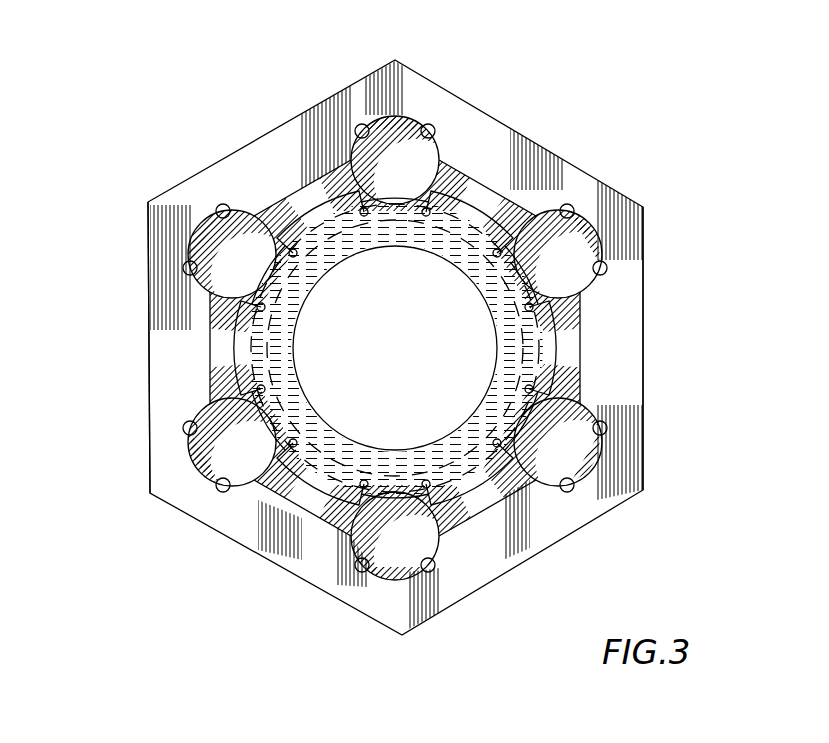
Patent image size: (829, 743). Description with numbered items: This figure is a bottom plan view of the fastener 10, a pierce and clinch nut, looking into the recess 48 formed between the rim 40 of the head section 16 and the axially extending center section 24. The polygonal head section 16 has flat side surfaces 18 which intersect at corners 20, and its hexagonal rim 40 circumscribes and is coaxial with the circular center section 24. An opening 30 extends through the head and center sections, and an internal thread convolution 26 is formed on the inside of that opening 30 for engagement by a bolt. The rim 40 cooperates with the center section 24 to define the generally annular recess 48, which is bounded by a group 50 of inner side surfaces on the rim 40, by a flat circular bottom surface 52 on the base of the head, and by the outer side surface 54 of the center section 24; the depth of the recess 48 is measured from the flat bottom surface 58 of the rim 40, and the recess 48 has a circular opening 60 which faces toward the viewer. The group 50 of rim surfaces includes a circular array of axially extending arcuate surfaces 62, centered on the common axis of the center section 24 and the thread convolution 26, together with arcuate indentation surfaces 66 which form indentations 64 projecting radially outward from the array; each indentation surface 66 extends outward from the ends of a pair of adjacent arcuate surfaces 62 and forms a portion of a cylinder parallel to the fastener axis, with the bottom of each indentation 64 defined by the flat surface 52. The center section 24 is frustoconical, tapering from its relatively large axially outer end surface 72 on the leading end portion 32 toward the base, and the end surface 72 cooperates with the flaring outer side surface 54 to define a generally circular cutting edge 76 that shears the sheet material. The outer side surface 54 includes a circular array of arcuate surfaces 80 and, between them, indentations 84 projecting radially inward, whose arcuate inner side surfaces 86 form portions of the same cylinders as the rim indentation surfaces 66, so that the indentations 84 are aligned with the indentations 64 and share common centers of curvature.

The fastener 10 is at (632, 92).
The polygonal head section 16 is at (283, 108).
The flat side surfaces 18 is at (350, 80).
The corners 20 is at (395, 60).
The center section 24 is at (228, 345).
The internal thread convolution 26 is at (335, 415).
The opening 30 is at (384, 323).
The leading end portion 32 is at (294, 333).
The rim 40 is at (628, 304).
The recess 48 is at (278, 497).
The group of inner side surfaces 50 is at (493, 565).
The flat circular bottom surface 52 is at (365, 475).
The outer side surface 54 is at (565, 370).
The flat bottom surface of the rim 58 is at (333, 580).
The circular opening of the recess 60 is at (222, 370).
The arcuate surfaces 62 is at (263, 135).
The indentations 64 is at (398, 125).
The indentation surfaces 66 is at (362, 125).
The axially outer end surface 72 is at (335, 262).
The cutting edge 76 is at (425, 215).
The arcuate surfaces 80 is at (297, 215).
The indentations 84 is at (368, 175).
The arcuate inner side surfaces 86 is at (403, 205).